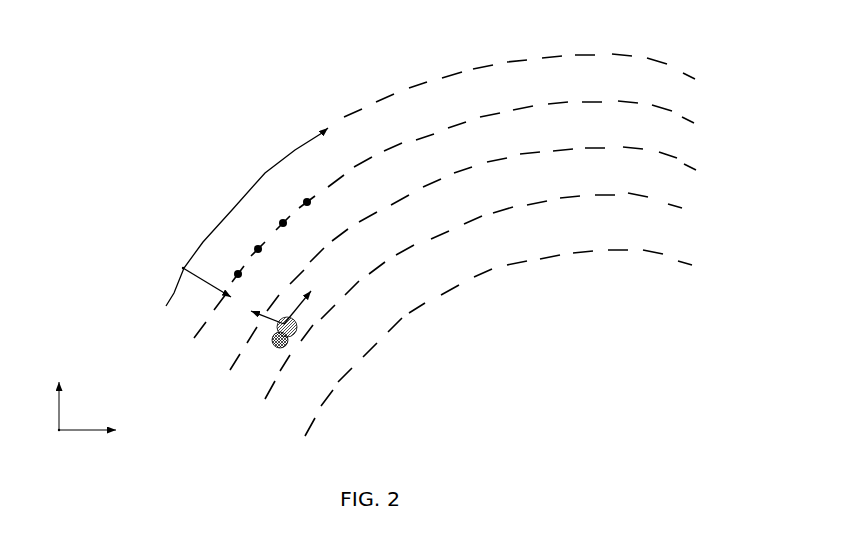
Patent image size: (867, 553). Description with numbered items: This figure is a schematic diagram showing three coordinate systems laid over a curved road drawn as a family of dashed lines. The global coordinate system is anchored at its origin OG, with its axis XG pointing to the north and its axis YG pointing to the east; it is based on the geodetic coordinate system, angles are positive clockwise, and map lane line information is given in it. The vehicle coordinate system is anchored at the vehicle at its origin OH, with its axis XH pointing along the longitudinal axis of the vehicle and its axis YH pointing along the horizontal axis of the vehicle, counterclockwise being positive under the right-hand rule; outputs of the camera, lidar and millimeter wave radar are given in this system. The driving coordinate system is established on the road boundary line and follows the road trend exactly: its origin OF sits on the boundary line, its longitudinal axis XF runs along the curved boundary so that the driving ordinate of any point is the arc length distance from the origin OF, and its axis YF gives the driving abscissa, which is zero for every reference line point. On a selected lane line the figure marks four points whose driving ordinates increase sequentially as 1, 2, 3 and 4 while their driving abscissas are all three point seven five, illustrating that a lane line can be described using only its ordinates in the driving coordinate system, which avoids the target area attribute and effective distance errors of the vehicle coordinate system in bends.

The longitudinal axis of the driving coordinate system XF is at (247, 202).
The Y axis of the driving coordinate system YF is at (207, 288).
The origin of the driving coordinate system OF is at (170, 263).
The driving ordinate of first lane line point 1 is at (260, 280).
The driving ordinate of second lane line point 2 is at (283, 253).
The driving ordinate of third lane line point 3 is at (308, 228).
The driving ordinate of fourth lane line point 4 is at (333, 207).
The origin of the vehicle coordinate system OH is at (285, 335).
The longitudinal axis of the vehicle coordinate system XH is at (312, 296).
The horizontal axis of the vehicle coordinate system YH is at (254, 317).
The north axis of the global coordinate system XG is at (62, 394).
The east axis of the global coordinate system YG is at (103, 436).
The origin of the global coordinate system OG is at (61, 445).